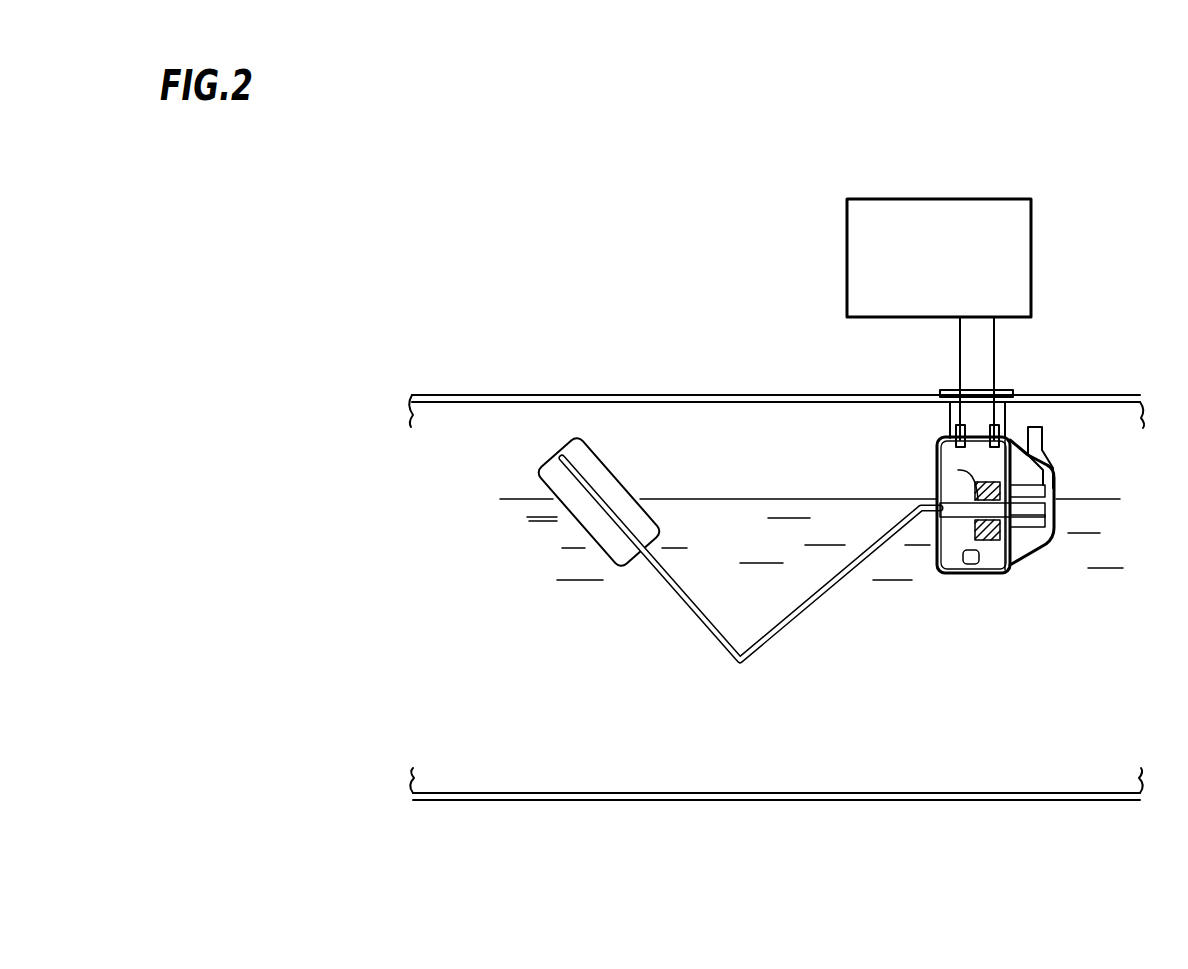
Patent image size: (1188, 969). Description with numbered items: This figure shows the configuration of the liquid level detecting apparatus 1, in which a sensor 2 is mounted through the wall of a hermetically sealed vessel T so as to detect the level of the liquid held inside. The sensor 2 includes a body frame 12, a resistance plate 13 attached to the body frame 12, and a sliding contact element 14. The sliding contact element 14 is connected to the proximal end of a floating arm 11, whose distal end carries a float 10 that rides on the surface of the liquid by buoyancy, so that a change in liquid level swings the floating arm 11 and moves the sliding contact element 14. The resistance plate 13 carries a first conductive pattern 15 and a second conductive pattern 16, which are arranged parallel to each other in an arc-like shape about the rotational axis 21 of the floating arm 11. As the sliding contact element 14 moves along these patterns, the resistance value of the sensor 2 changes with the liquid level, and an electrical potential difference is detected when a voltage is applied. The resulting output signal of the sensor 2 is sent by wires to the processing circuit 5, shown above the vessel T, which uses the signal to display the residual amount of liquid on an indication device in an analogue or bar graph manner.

The liquid level detecting apparatus 1 is at (905, 194).
The sensor 2 is at (936, 441).
The processing circuit 5 is at (1033, 222).
The float 10 is at (602, 462).
The floating arm 11 is at (677, 584).
The body frame 12 is at (988, 566).
The resistance plate 13 is at (932, 573).
The sliding contact element 14 is at (937, 480).
The first conductive pattern 15 is at (960, 572).
The second conductive pattern 16 is at (1018, 572).
The rotational axis 21 is at (1045, 552).
The hermetically sealed vessel T is at (578, 415).